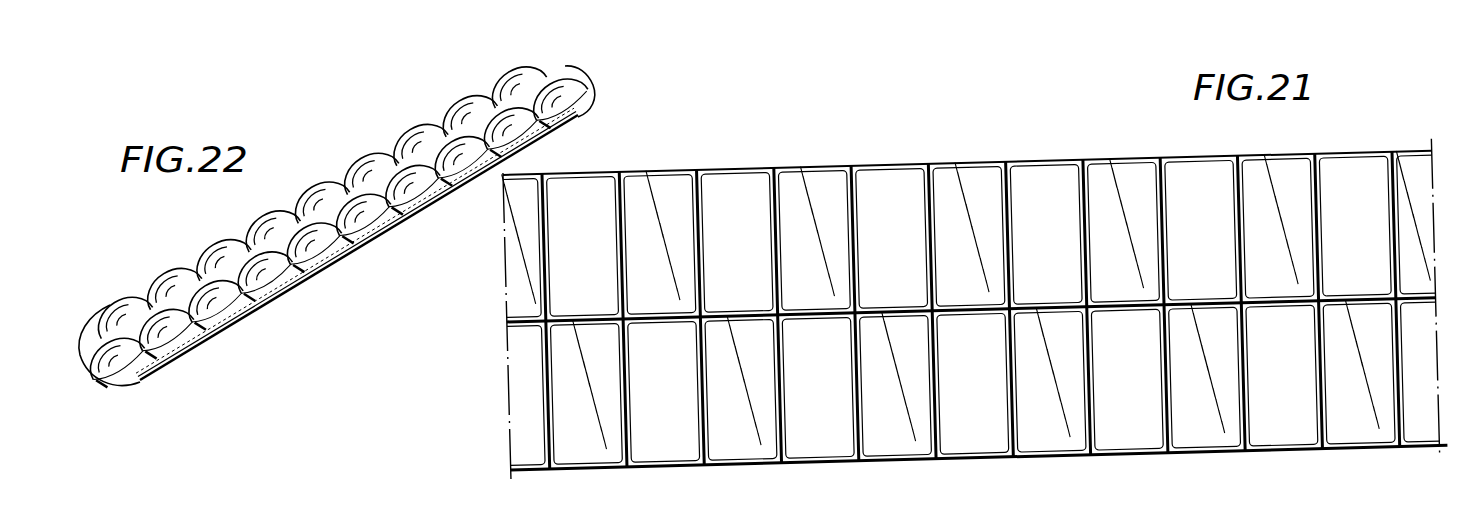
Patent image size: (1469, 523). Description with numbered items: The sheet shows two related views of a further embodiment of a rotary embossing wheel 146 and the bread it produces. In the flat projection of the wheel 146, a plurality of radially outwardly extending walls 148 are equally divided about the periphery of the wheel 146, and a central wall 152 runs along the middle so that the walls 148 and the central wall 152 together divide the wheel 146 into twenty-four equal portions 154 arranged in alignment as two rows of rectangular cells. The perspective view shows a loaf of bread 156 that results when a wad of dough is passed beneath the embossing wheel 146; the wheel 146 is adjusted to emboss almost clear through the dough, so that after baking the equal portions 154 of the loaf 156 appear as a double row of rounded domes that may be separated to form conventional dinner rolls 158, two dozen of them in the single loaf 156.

In FIG. 21, the rotary embossing wheel 146 is at (841, 160).
In FIG. 21, the radially outwardly extending walls 148 is at (852, 181).
In FIG. 21, the central wall 152 is at (898, 313).
In FIG. 21, the equal portions 154 is at (669, 193).
In FIG. 22, the loaf of bread 156 is at (362, 229).
In FIG. 22, the dinner rolls 158 is at (566, 80).